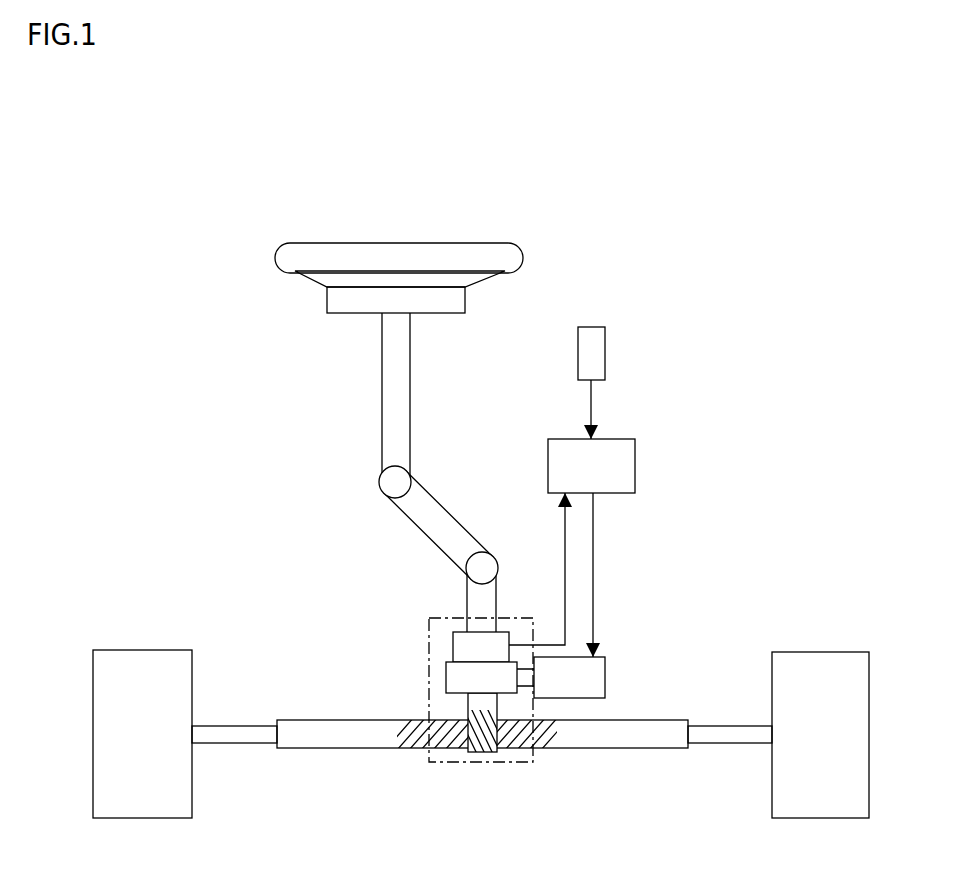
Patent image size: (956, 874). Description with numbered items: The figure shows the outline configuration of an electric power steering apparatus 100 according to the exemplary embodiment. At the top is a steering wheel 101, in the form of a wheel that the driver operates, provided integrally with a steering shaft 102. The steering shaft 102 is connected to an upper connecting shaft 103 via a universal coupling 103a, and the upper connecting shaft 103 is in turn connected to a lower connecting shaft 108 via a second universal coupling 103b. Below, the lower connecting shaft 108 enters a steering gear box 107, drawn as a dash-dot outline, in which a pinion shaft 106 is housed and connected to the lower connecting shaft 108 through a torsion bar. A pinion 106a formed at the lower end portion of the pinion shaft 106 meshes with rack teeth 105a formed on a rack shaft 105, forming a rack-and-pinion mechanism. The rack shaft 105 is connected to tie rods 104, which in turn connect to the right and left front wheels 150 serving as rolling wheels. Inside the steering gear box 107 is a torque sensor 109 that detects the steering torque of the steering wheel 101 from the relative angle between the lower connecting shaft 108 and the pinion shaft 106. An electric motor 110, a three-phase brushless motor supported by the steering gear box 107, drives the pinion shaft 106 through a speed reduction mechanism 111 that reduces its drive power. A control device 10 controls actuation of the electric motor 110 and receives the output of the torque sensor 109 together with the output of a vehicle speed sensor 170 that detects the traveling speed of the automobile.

The electric power steering apparatus 100 is at (142, 357).
The steering wheel 101 is at (275, 258).
The steering shaft 102 is at (410, 400).
The upper connecting shaft 103 is at (447, 515).
The universal coupling 103a is at (380, 478).
The universal coupling 103b is at (468, 560).
The tie rods 104 is at (230, 726).
The rack shaft 105 is at (645, 748).
The rack teeth 105a is at (555, 748).
The pinion shaft 106 is at (468, 708).
The pinion 106a is at (470, 755).
The steering gear box 107 is at (428, 620).
The lower connecting shaft 108 is at (467, 590).
The torque sensor 109 is at (509, 632).
The electric motor 110 is at (605, 657).
The speed reduction mechanism 111 is at (446, 668).
The control device 10 is at (635, 466).
The front wheels 150 is at (135, 650).
The vehicle speed sensor 170 is at (598, 327).